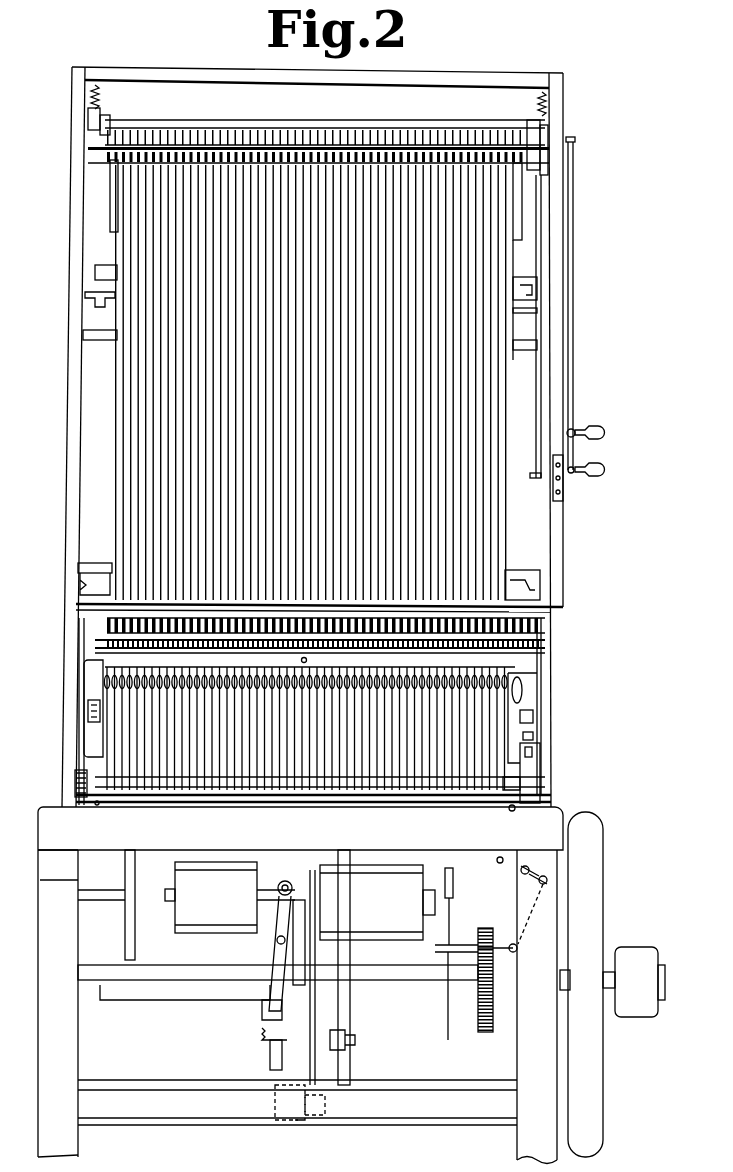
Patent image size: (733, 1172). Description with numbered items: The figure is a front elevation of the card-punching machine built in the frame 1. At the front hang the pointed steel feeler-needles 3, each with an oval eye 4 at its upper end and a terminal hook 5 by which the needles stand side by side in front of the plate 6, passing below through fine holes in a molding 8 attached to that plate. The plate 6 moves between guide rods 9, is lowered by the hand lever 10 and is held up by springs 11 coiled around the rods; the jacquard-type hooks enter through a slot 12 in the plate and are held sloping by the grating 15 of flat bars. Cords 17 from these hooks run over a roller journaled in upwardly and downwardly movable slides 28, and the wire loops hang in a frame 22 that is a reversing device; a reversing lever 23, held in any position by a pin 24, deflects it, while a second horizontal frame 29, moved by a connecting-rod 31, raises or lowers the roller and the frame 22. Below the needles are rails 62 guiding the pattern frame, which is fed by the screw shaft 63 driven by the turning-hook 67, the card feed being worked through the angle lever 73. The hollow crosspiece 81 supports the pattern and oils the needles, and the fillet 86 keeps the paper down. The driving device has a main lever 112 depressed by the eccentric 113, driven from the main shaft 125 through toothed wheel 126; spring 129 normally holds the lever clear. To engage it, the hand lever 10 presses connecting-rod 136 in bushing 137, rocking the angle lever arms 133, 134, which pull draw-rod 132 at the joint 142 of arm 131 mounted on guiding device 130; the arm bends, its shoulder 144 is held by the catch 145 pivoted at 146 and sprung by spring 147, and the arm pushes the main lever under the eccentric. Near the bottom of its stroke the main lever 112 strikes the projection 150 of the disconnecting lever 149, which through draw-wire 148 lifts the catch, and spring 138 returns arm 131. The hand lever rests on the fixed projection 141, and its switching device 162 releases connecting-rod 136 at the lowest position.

The frame 1 is at (78, 72).
The feeler-needles 3 is at (107, 793).
The oval eye 4 is at (105, 681).
The hook 5 is at (103, 653).
The plate 6 is at (155, 734).
The molding 8 is at (105, 776).
The guide rods 9 is at (82, 708).
The hand lever 10 is at (530, 690).
The springs 11 is at (115, 789).
The slot 12 is at (497, 682).
The grating 15 is at (78, 640).
The cords 17 is at (485, 545).
The frame 22 is at (110, 203).
The reversing lever 23 is at (580, 244).
The pin 24 is at (604, 434).
The slides 28 is at (95, 122).
The second horizontal frame 29 is at (165, 126).
The connecting-rod 31 is at (536, 470).
The rails 62 is at (97, 805).
The screw shaft 63 is at (517, 808).
The turning-hook 67 is at (490, 828).
The angle lever 73 is at (476, 896).
The hollow crosspiece 81 is at (256, 796).
The molding or fillet 86 is at (216, 790).
The main lever 112 is at (258, 1036).
The eccentric 113 is at (303, 967).
The main shaft 125 is at (668, 972).
The toothed wheel 126 is at (484, 1034).
The spring 129 is at (262, 1055).
The guiding device 130 is at (280, 1090).
The arm 131 is at (268, 980).
The draw-rod 132 is at (448, 1000).
The arm of angle lever 133 is at (517, 948).
The arm of angle lever 134 is at (535, 895).
The connecting-rod 136 is at (530, 750).
The bushing 137 is at (527, 781).
The spring 138 is at (279, 880).
The fixed projection 141 is at (533, 738).
The joint 142 is at (330, 940).
The shoulder 144 is at (275, 913).
The catch 145 is at (316, 875).
The fixed pivot 146 is at (322, 880).
The spring 147 is at (330, 913).
The draw-wire 148 is at (345, 1026).
The lever 149 is at (325, 1105).
The lateral projection 150 is at (300, 1110).
The switching device 162 is at (535, 714).